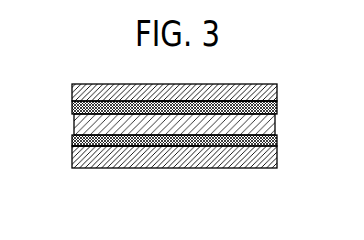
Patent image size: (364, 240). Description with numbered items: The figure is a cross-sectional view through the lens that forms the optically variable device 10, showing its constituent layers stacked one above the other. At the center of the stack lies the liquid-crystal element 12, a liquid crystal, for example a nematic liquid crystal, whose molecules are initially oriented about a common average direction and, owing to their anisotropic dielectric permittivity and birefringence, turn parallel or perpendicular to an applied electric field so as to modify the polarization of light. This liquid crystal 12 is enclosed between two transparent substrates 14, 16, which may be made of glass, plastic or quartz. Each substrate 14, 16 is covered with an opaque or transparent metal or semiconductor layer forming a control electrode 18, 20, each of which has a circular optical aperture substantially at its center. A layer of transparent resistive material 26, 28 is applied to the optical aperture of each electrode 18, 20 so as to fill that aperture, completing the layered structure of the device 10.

The optically variable device 10 is at (185, 119).
The liquid-crystal element 12 is at (276, 122).
The transparent substrate 14 is at (278, 88).
The transparent substrate 16 is at (278, 157).
The control electrode 18 is at (72, 107).
The control electrode 20 is at (72, 141).
The transparent resistive material layer 26 is at (198, 106).
The transparent resistive material layer 28 is at (168, 149).